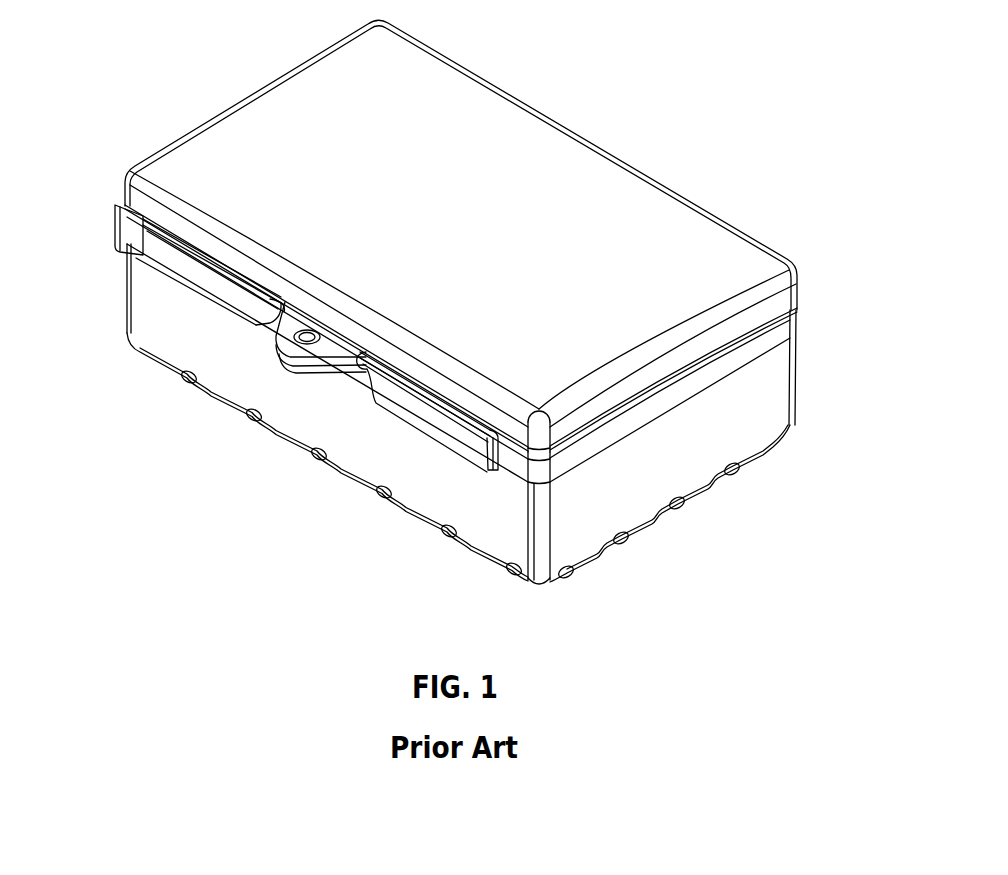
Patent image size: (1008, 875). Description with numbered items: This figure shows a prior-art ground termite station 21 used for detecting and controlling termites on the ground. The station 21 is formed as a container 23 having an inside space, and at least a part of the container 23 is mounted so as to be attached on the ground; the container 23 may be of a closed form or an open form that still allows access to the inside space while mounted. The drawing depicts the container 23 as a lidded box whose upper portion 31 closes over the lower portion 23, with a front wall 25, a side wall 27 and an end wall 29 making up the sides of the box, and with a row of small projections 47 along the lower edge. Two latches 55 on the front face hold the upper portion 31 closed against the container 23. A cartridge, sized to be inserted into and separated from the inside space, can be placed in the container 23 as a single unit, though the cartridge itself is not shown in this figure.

The station 21 is at (570, 88).
The container 23 is at (811, 368).
The bottom wall 25 is at (449, 549).
The side wall 27 is at (768, 413).
The end wall 29 is at (163, 312).
The lid 31 is at (665, 220).
The feet 47 is at (655, 522).
The latches 55 is at (167, 266).